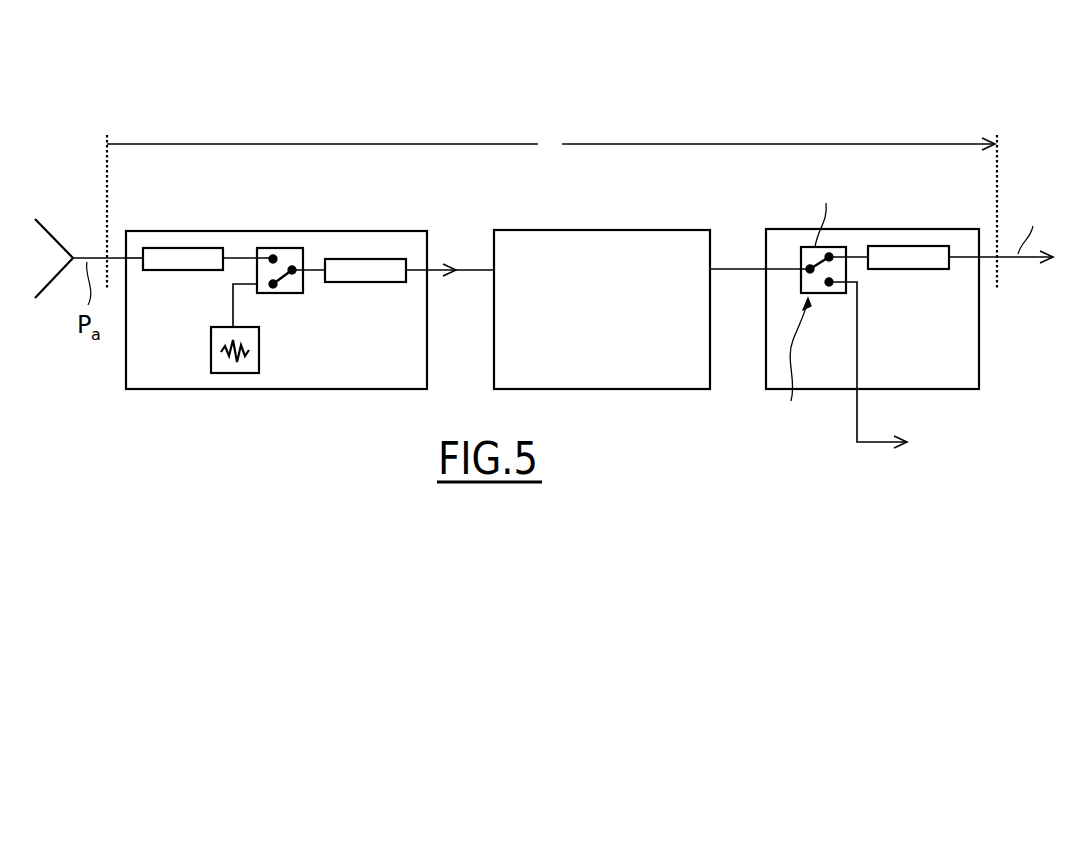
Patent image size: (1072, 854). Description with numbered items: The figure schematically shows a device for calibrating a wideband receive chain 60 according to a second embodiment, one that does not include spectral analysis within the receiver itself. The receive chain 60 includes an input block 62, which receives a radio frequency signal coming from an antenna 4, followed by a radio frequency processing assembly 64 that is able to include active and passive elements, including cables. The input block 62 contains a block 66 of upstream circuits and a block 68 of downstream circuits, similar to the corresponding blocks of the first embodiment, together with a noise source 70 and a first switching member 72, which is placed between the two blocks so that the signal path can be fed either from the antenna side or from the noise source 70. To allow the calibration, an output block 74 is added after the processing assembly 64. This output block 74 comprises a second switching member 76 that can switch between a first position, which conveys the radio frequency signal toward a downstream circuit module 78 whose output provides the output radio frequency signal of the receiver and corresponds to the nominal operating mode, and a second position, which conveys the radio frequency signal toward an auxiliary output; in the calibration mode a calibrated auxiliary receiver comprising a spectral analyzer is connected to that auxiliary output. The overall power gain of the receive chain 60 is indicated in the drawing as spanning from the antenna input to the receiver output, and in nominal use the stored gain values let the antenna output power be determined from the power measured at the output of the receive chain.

The antenna 4 is at (50, 219).
The receive chain 60 is at (322, 130).
The input block 62 is at (314, 231).
The radio frequency processing assembly 64 is at (626, 230).
The block of upstream circuits 66 is at (178, 271).
The block of downstream circuits 68 is at (362, 283).
The noise source 70 is at (259, 350).
The first switching member 72 is at (285, 295).
The output block 74 is at (930, 229).
The second switching member 76 is at (826, 294).
The downstream circuit module 78 is at (910, 270).